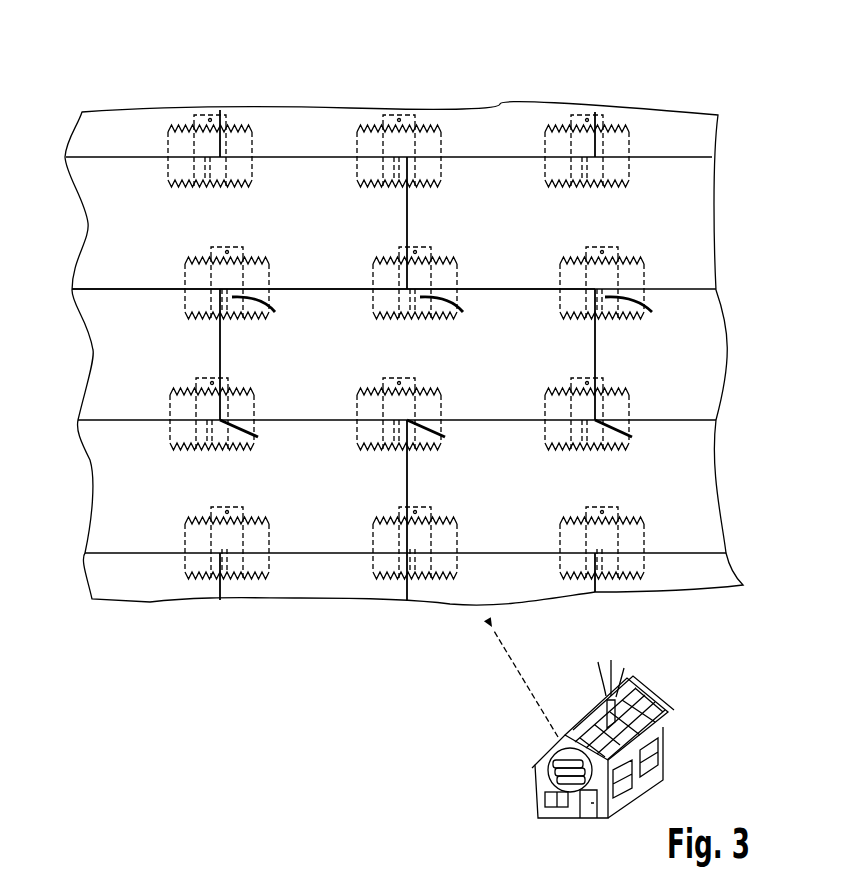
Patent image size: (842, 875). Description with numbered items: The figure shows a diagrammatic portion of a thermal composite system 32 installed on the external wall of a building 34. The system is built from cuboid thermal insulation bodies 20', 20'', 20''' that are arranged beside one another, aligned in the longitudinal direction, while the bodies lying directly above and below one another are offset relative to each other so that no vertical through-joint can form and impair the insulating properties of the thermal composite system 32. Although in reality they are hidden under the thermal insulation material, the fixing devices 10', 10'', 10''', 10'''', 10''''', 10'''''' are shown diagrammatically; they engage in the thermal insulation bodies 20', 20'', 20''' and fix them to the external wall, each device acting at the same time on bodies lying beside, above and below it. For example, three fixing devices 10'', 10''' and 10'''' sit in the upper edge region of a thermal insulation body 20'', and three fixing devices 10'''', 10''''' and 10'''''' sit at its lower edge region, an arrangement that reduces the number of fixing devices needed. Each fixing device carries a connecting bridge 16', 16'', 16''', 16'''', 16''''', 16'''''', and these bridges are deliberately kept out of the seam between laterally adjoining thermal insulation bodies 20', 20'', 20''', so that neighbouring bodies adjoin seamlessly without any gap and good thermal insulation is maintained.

The fixing device 10' is at (251, 250).
The fixing device 10'' is at (440, 250).
The fixing device 10''' is at (629, 250).
The fixing device 10'''' is at (192, 456).
The fixing device 10''''' is at (380, 456).
The fixing device 10'''''' is at (568, 456).
The connecting bridge 16' is at (275, 330).
The connecting bridge 16'' is at (465, 330).
The connecting bridge 16''' is at (654, 330).
The connecting bridge 16'''' is at (265, 458).
The connecting bridge 16''''' is at (456, 458).
The connecting bridge 16'''''' is at (643, 458).
The thermal insulation body 20' is at (146, 329).
The thermal insulation body 20'' is at (313, 329).
The thermal insulation body 20''' is at (531, 329).
The thermal composite system 32 is at (659, 87).
The building 34 is at (665, 683).